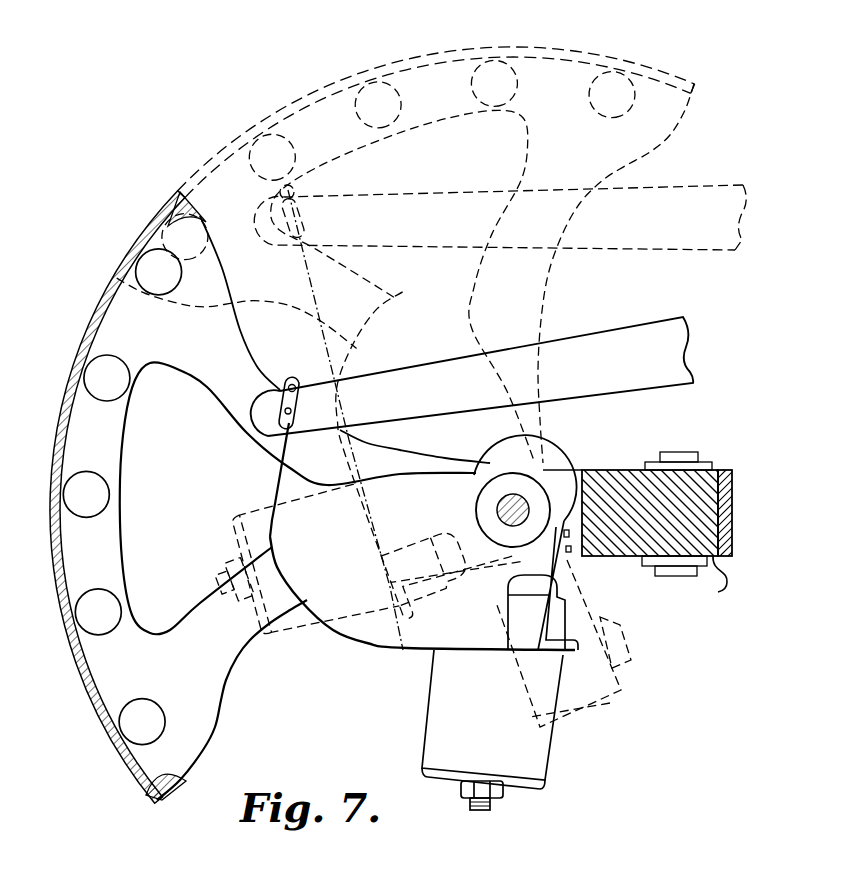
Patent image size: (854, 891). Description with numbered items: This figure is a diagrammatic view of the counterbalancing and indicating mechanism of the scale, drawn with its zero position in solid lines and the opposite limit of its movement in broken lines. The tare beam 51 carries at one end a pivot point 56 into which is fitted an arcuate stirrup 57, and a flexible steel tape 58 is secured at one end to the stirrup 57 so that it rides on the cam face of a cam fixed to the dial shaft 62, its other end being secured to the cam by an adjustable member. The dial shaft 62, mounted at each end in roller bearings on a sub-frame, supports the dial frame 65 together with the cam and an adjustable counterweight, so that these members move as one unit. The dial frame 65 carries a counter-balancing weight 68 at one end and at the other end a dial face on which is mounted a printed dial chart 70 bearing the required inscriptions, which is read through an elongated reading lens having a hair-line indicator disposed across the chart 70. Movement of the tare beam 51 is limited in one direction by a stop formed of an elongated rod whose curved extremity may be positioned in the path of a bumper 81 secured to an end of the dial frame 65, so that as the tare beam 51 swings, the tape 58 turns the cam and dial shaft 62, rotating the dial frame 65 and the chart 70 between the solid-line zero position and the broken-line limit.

The tare beam 51 is at (627, 346).
The pivot point 56 is at (306, 350).
The arcuate stirrup 57 is at (264, 398).
The flexible steel tape 58 is at (274, 479).
The dial shaft 62 is at (362, 630).
The dial frame 65 is at (246, 637).
The counter-balancing weight 68 is at (713, 560).
The printed dial chart 70 is at (122, 759).
The bumper 81 is at (700, 430).